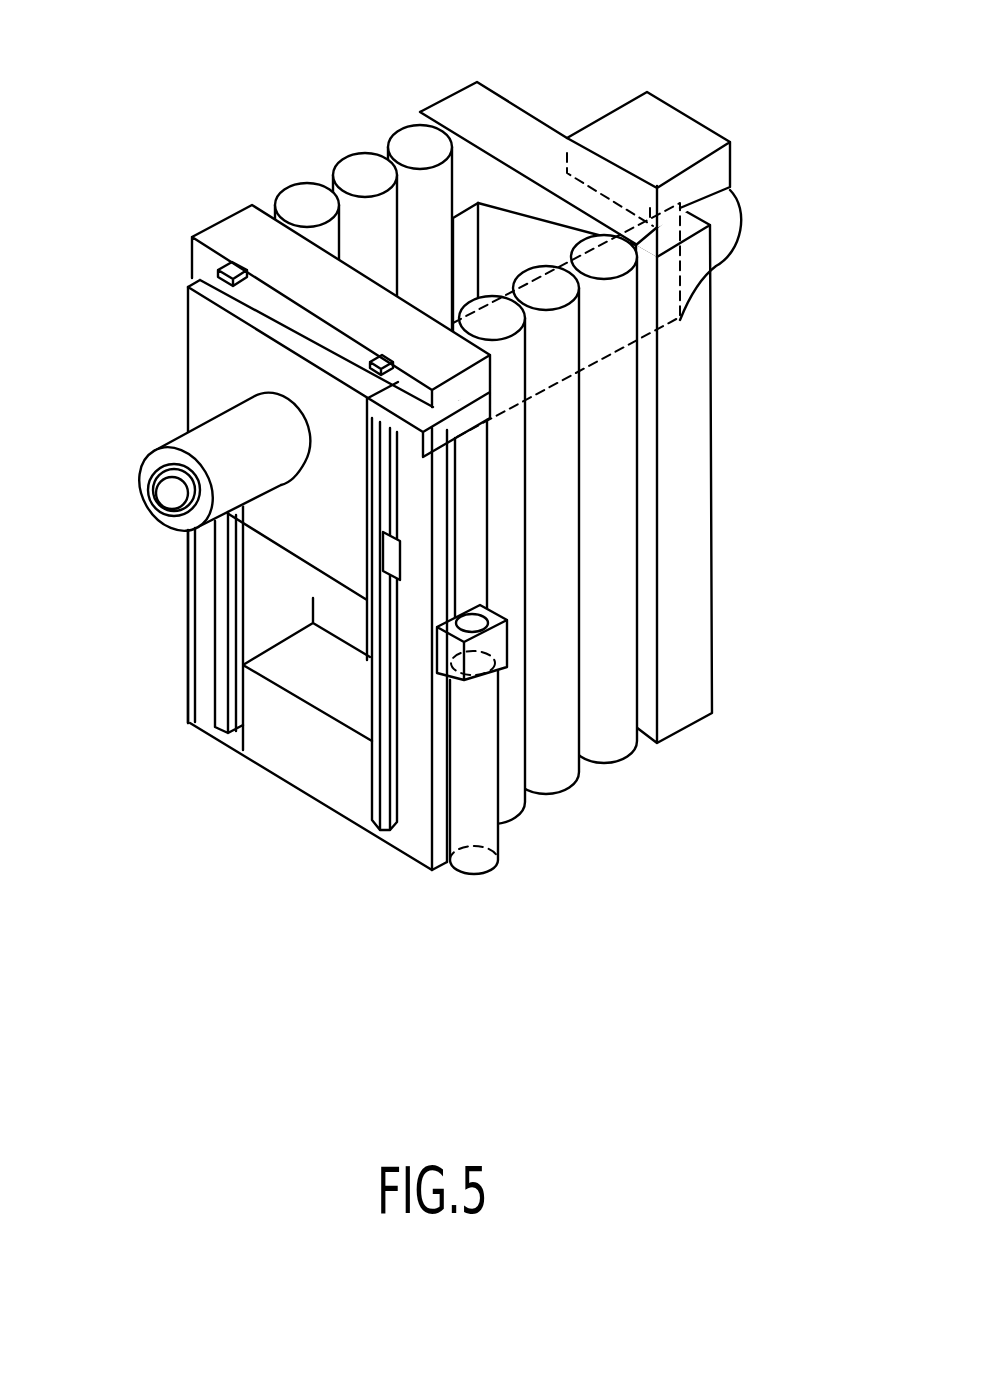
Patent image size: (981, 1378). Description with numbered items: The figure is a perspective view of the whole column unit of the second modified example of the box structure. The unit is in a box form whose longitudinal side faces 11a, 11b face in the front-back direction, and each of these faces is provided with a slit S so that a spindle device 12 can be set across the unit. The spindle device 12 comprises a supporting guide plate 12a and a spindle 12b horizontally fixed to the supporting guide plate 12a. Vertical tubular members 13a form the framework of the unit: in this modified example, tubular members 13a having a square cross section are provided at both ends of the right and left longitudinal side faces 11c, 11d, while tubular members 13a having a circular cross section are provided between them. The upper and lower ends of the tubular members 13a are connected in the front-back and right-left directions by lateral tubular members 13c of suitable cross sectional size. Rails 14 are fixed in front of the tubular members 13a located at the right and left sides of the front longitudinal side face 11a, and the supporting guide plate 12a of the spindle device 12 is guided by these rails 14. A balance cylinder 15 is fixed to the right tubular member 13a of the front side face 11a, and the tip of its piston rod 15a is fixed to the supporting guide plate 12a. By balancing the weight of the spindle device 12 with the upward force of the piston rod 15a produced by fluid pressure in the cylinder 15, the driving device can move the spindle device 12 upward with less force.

The front longitudinal side face 11a is at (200, 708).
The longitudinal side face 11b is at (732, 275).
The right longitudinal side face 11c is at (252, 122).
The left longitudinal side face 11d is at (615, 817).
The spindle device 12 is at (225, 467).
The supporting guide plate 12a is at (190, 412).
The spindle 12b is at (152, 507).
The tubular member 13a is at (415, 822).
The lateral tubular member 13c is at (330, 772).
The rail 14 is at (390, 703).
The balance cylinder 15 is at (483, 862).
The piston rod 15a is at (475, 567).
The slit S is at (343, 623).